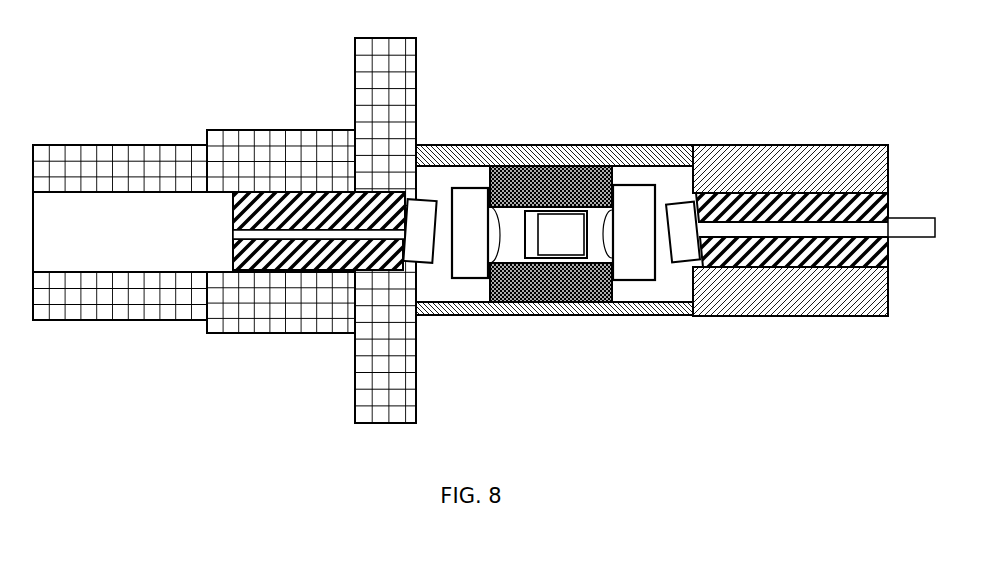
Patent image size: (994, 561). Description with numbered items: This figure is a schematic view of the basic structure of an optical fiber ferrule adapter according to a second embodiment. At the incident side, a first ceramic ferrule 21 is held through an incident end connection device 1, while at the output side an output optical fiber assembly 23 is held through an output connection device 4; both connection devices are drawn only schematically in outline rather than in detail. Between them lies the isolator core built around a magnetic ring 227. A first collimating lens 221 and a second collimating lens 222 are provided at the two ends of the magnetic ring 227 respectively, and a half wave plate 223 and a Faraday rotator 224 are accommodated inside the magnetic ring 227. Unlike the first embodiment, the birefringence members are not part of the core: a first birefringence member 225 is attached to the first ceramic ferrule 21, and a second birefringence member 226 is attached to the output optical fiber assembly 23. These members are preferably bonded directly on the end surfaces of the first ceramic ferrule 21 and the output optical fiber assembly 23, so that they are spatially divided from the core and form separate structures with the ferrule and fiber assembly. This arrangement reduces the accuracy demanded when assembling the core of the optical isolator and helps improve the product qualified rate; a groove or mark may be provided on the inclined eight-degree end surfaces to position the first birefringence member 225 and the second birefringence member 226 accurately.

The incident end connection device 1 is at (250, 120).
The first ceramic ferrule 21 is at (222, 205).
The output connection device 4 is at (764, 126).
The output optical fiber assembly 23 is at (903, 218).
The first collimating lens 221 is at (465, 279).
The second collimating lens 222 is at (632, 185).
The half wave plate 223 is at (530, 168).
The Faraday rotator 224 is at (575, 211).
The first birefringence member 225 is at (429, 198).
The second birefringence member 226 is at (679, 203).
The magnetic ring 227 is at (477, 145).